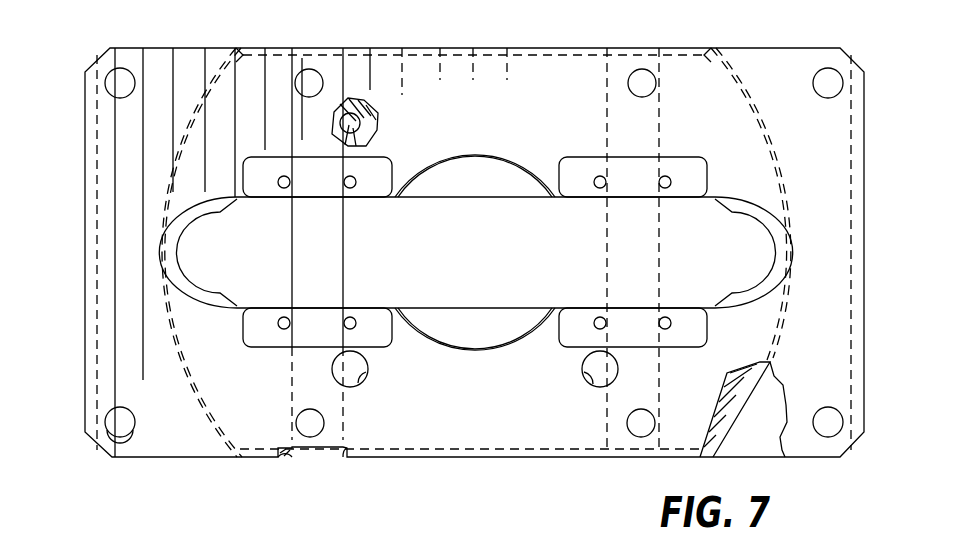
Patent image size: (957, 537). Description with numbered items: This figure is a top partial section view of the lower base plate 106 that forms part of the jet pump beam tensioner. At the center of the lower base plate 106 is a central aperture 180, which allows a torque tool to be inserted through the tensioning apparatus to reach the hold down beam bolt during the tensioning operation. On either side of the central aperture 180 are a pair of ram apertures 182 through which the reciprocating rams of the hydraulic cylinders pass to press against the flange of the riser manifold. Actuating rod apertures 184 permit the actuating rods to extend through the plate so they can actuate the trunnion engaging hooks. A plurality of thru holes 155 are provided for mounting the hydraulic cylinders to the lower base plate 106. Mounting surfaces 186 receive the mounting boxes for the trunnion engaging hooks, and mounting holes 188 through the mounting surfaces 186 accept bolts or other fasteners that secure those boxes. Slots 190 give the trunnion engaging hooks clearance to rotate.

The lower base plate 106 is at (766, 58).
The thru holes 155 is at (127, 437).
The central aperture 180 is at (430, 333).
The ram apertures 182 is at (182, 273).
The actuating rod apertures 184 is at (370, 373).
The mounting surfaces 186 is at (370, 188).
The mounting holes 188 is at (285, 184).
The slots 190 is at (300, 68).